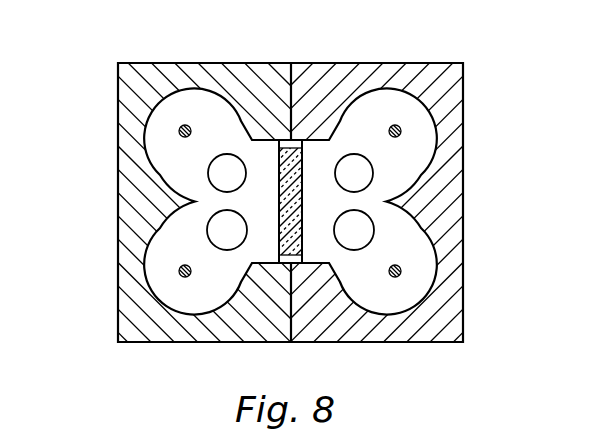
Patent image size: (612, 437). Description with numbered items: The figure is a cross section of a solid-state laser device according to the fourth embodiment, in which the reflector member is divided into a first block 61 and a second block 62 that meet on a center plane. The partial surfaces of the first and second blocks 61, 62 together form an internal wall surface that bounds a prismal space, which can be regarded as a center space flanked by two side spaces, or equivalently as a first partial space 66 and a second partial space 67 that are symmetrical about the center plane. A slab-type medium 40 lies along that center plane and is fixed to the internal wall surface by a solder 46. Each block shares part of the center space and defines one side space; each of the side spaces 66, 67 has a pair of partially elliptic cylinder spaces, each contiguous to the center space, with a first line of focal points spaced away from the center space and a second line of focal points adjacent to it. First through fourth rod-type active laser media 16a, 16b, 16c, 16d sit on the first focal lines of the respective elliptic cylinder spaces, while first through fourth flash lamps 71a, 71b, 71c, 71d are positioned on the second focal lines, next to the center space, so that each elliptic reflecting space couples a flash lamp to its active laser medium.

The first block 61 is at (190, 63).
The second block 62 is at (400, 63).
The first partial space 66 is at (265, 207).
The second partial space 67 is at (330, 207).
The slab-type medium 40 is at (273, 234).
The solder 46 is at (298, 263).
The first active laser medium 16a is at (179, 130).
The second active laser medium 16b is at (179, 270).
The third active laser medium 16c is at (401, 272).
The fourth active laser medium 16d is at (401, 129).
The first flash lamp 71a is at (209, 163).
The second flash lamp 71b is at (209, 237).
The third flash lamp 71c is at (372, 223).
The fourth flash lamp 71d is at (373, 175).